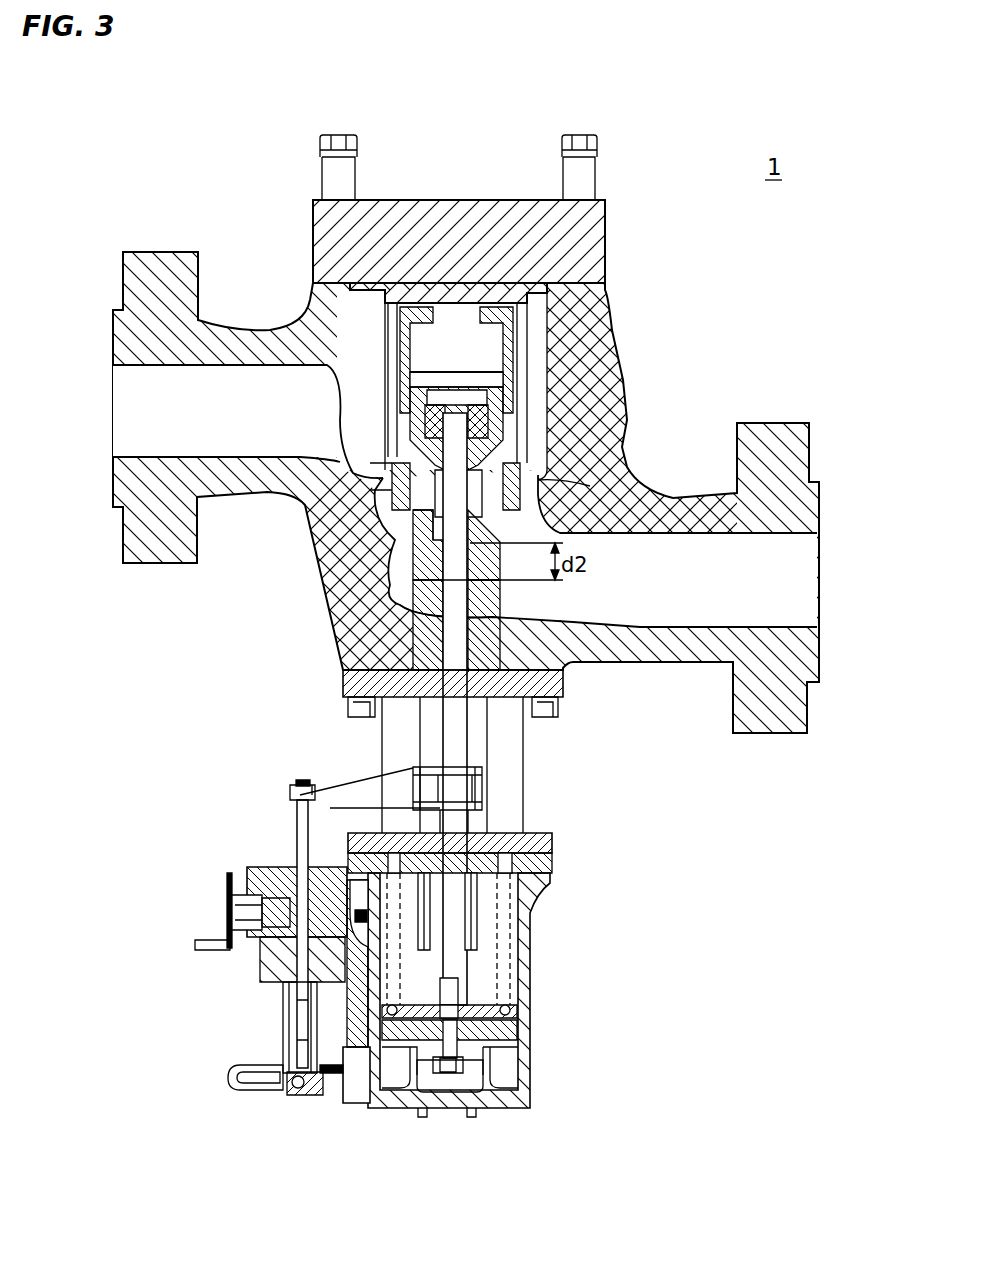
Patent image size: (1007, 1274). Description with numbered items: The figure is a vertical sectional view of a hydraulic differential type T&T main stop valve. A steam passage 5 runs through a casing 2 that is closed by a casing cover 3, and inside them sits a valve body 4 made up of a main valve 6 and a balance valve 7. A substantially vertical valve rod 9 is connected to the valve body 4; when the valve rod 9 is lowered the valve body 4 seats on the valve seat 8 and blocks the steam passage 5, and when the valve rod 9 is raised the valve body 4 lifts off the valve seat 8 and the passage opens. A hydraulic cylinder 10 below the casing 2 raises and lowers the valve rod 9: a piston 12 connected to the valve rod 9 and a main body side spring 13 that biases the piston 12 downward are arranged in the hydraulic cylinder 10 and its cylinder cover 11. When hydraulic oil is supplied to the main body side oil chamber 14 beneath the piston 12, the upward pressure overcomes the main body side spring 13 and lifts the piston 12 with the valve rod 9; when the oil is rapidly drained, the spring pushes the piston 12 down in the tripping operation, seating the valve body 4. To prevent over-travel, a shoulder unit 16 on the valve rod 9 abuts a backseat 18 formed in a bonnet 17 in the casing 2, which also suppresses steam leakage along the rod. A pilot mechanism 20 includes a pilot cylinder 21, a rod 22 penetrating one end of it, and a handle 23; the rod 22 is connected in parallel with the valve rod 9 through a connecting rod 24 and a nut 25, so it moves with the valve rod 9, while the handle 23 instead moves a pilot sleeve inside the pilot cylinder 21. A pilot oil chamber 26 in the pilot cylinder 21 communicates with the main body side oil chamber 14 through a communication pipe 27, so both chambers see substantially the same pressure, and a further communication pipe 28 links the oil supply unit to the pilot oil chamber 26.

The casing 2 is at (313, 537).
The casing cover 3 is at (605, 232).
The valve body 4 is at (540, 430).
The steam passage 5 is at (237, 402).
The main valve 6 is at (512, 430).
The balance valve 7 is at (553, 385).
The valve seat 8 is at (553, 487).
The valve rod 9 is at (452, 723).
The hydraulic cylinder 10 is at (525, 915).
The cylinder cover 11 is at (550, 858).
The piston 12 is at (500, 1030).
The main body side spring 13 is at (505, 968).
The main body side oil chamber 14 is at (390, 1070).
The shoulder unit 16 is at (425, 580).
The bonnet 17 is at (418, 600).
The backseat 18 is at (425, 545).
The pilot mechanism 20 is at (252, 853).
The pilot cylinder 21 is at (260, 1040).
The rod 22 is at (300, 830).
The handle 23 is at (228, 890).
The connecting rod 24 is at (372, 790).
The nut 25 is at (298, 785).
The pilot oil chamber 26 is at (293, 1095).
The communication pipe 27 is at (230, 1077).
The communication pipe 28 is at (327, 1075).